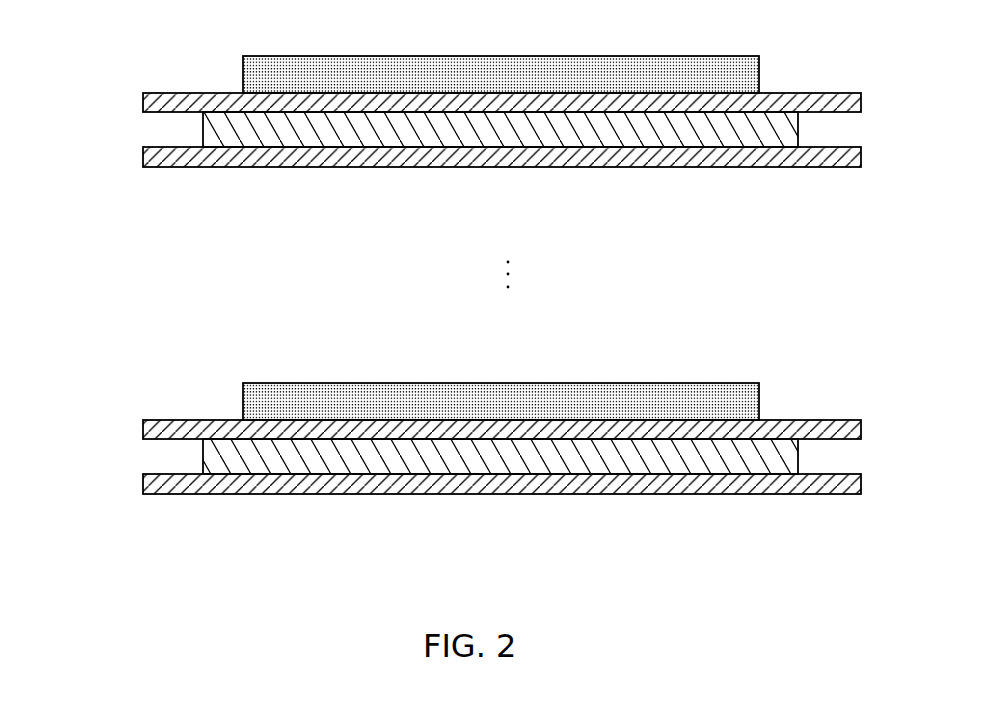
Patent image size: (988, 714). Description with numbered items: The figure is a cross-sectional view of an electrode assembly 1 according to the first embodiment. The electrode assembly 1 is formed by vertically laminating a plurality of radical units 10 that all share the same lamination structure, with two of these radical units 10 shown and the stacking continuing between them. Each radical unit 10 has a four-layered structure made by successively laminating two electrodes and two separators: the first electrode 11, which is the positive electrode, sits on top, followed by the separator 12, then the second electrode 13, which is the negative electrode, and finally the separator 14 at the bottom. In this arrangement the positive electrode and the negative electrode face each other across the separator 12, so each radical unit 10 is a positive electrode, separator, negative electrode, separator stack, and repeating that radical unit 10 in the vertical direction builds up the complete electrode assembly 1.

The electrode assembly 1 is at (885, 54).
The radical unit 10 is at (65, 19).
The first electrode 11 is at (257, 76).
The separator 12 is at (150, 103).
The second electrode 13 is at (210, 132).
The separator 14 is at (150, 155).